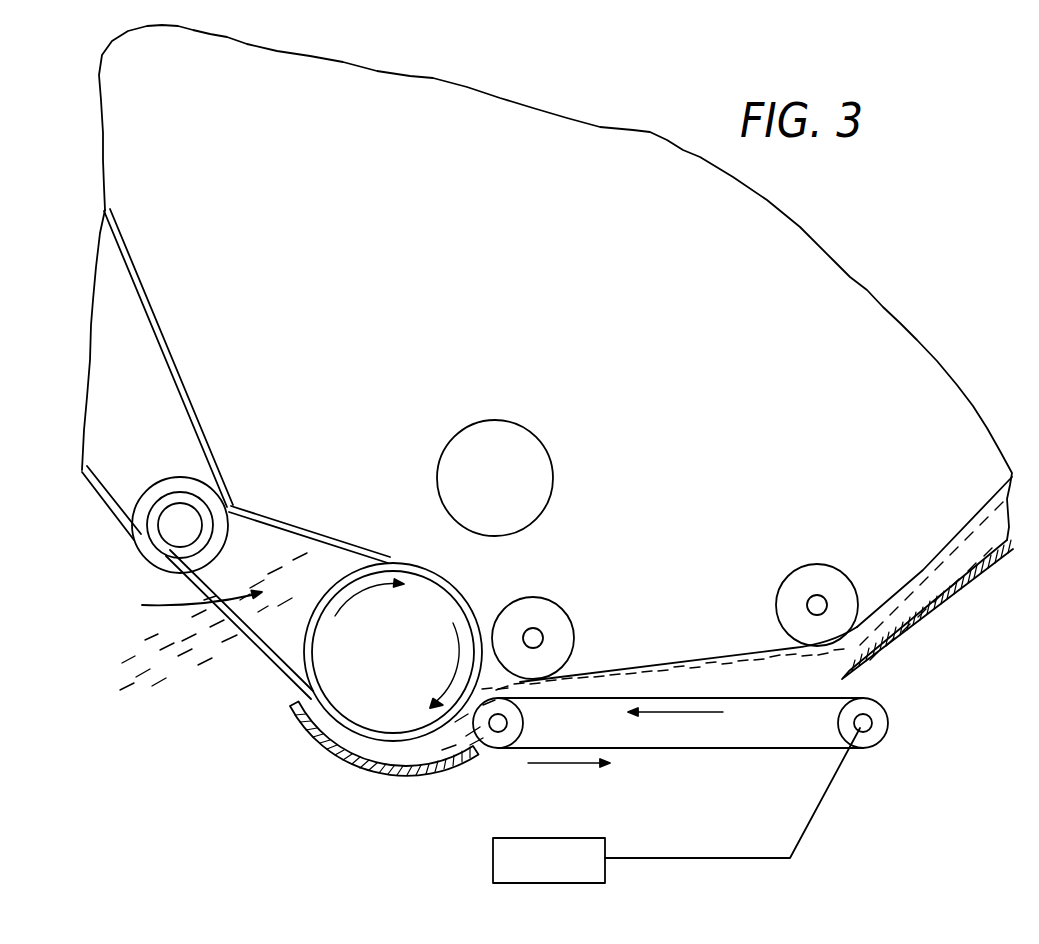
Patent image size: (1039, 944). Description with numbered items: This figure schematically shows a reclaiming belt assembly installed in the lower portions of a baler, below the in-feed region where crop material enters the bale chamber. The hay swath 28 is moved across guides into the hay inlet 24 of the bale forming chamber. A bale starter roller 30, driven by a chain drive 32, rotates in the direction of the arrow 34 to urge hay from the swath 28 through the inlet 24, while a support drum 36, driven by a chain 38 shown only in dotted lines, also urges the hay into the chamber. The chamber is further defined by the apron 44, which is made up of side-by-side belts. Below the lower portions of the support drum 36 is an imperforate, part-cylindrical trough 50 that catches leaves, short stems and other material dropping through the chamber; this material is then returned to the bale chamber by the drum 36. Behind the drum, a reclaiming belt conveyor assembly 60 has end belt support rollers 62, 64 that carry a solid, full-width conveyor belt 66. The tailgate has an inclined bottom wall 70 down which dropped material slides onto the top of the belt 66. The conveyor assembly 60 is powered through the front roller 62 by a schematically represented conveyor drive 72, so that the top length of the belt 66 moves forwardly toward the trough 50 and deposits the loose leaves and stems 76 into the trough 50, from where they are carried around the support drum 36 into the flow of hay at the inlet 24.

The hay inlet 24 is at (292, 484).
The hay swath 28 is at (278, 603).
The bale starter roller 30 is at (180, 477).
The chain drive 32 is at (145, 302).
The arrow 34 is at (177, 613).
The support drum 36 is at (350, 678).
The chain 38 is at (323, 532).
The apron 44 is at (930, 572).
The trough 50 is at (367, 775).
The reclaiming belt conveyor assembly 60 is at (660, 757).
The front belt support roller 62 is at (523, 727).
The end belt support roller 64 is at (873, 733).
The conveyor belt 66 is at (703, 753).
The inclined bottom wall 70 is at (907, 630).
The conveyor drive 72 is at (570, 837).
The leaves and stems 76 is at (708, 680).